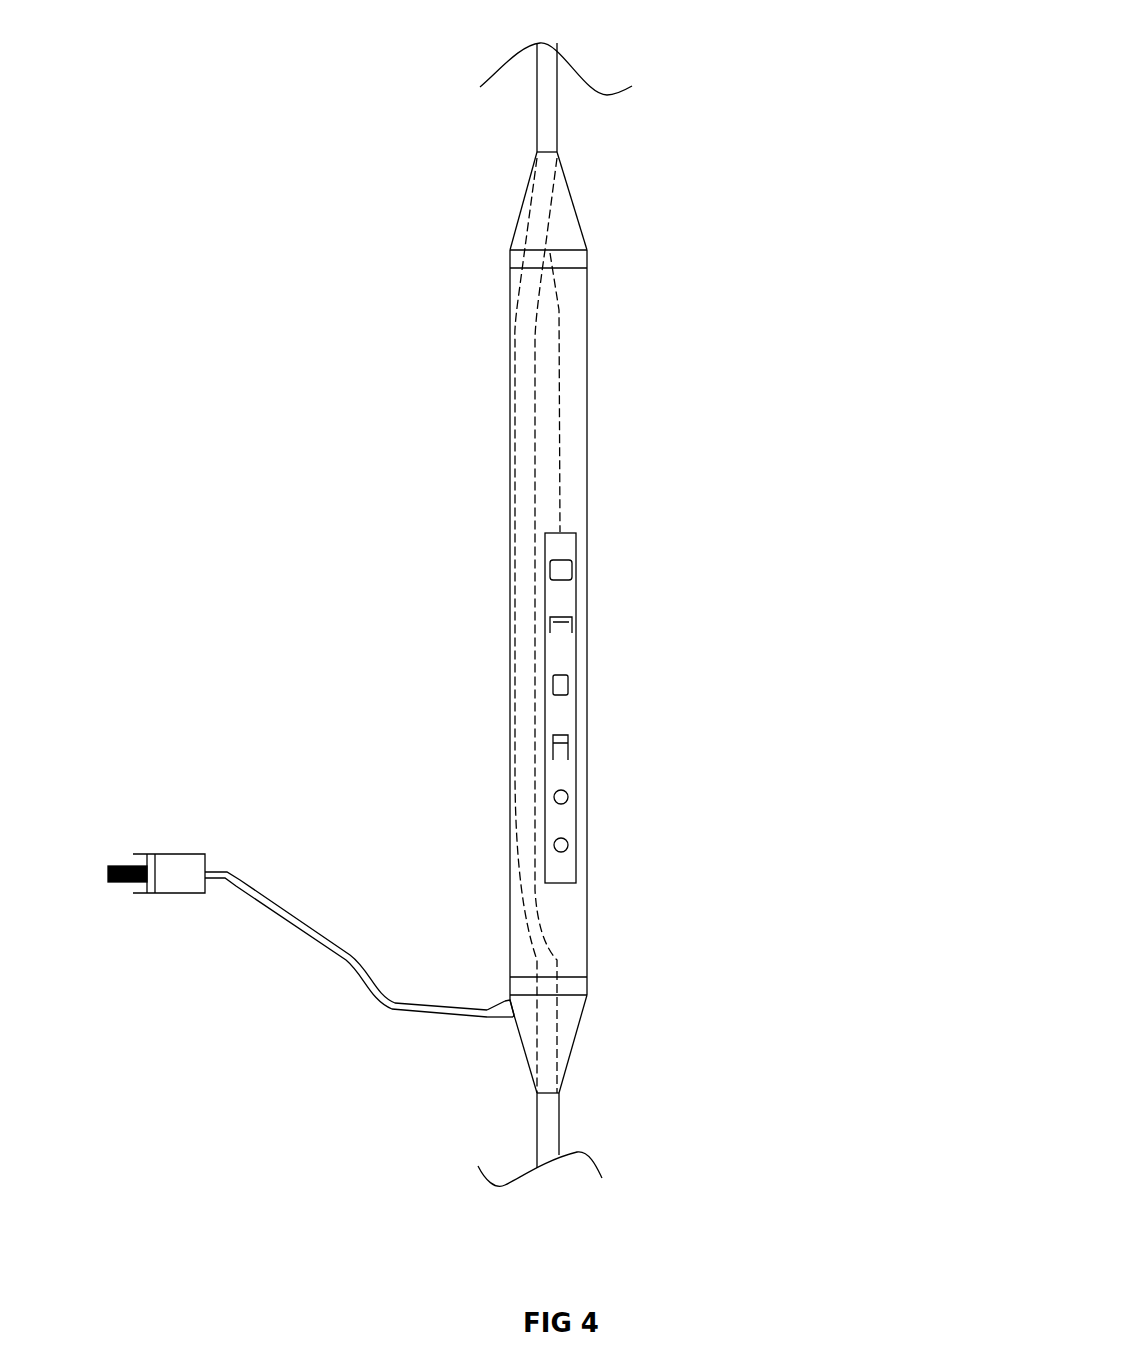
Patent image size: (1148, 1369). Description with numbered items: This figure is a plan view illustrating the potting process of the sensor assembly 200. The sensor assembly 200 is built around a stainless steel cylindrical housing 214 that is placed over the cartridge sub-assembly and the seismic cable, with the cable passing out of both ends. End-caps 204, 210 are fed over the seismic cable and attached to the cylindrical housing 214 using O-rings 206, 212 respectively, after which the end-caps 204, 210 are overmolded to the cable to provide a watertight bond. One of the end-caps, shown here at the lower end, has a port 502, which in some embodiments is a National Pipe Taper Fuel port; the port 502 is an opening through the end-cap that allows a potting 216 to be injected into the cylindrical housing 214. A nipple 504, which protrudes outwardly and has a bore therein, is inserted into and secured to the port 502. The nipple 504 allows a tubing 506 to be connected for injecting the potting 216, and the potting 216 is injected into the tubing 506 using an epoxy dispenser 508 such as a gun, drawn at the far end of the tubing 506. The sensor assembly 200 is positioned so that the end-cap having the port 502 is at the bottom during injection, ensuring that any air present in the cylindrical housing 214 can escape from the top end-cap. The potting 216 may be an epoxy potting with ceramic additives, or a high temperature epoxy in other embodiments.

The sensor assembly 200 is at (427, 58).
The end-cap 204 is at (564, 218).
The O-ring 206 is at (575, 252).
The end-cap 210 is at (578, 1012).
The O-ring 212 is at (578, 980).
The stainless steel cylindrical housing 214 is at (588, 645).
The potting 216 is at (575, 337).
The port 502 is at (523, 1008).
The nipple 504 is at (503, 1002).
The tubing 506 is at (292, 912).
The epoxy dispenser 508 is at (167, 850).